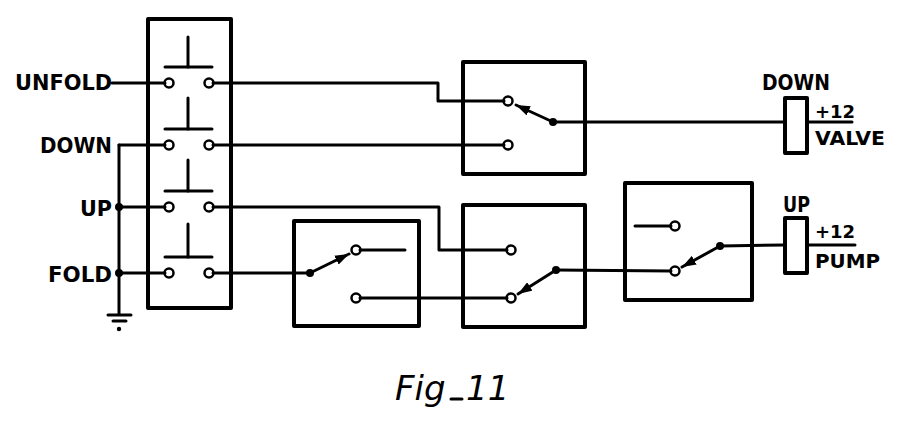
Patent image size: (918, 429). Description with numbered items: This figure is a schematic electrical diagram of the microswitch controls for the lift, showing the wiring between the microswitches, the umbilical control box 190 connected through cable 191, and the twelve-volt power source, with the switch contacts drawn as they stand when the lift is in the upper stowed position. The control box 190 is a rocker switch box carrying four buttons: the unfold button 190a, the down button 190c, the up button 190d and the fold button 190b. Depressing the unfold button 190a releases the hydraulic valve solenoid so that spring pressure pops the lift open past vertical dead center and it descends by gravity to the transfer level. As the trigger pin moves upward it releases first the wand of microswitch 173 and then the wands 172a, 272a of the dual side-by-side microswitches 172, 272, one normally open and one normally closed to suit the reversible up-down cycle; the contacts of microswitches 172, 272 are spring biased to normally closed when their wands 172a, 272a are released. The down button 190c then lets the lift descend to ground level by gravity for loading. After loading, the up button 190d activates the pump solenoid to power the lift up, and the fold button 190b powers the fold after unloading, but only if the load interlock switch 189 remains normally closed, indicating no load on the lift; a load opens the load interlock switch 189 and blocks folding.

The umbilical control box 190 is at (137, 60).
The unfold button 190a is at (188, 49).
The fold button 190b is at (188, 235).
The down button 190c is at (188, 109).
The up button 190d is at (188, 171).
The cable 191 is at (378, 79).
The microswitch 272 is at (503, 62).
The wand 272a is at (548, 123).
The microswitch 173 is at (343, 326).
The microswitch 172 is at (510, 327).
The wand 172a is at (541, 263).
The load interlock switch 189 is at (683, 183).